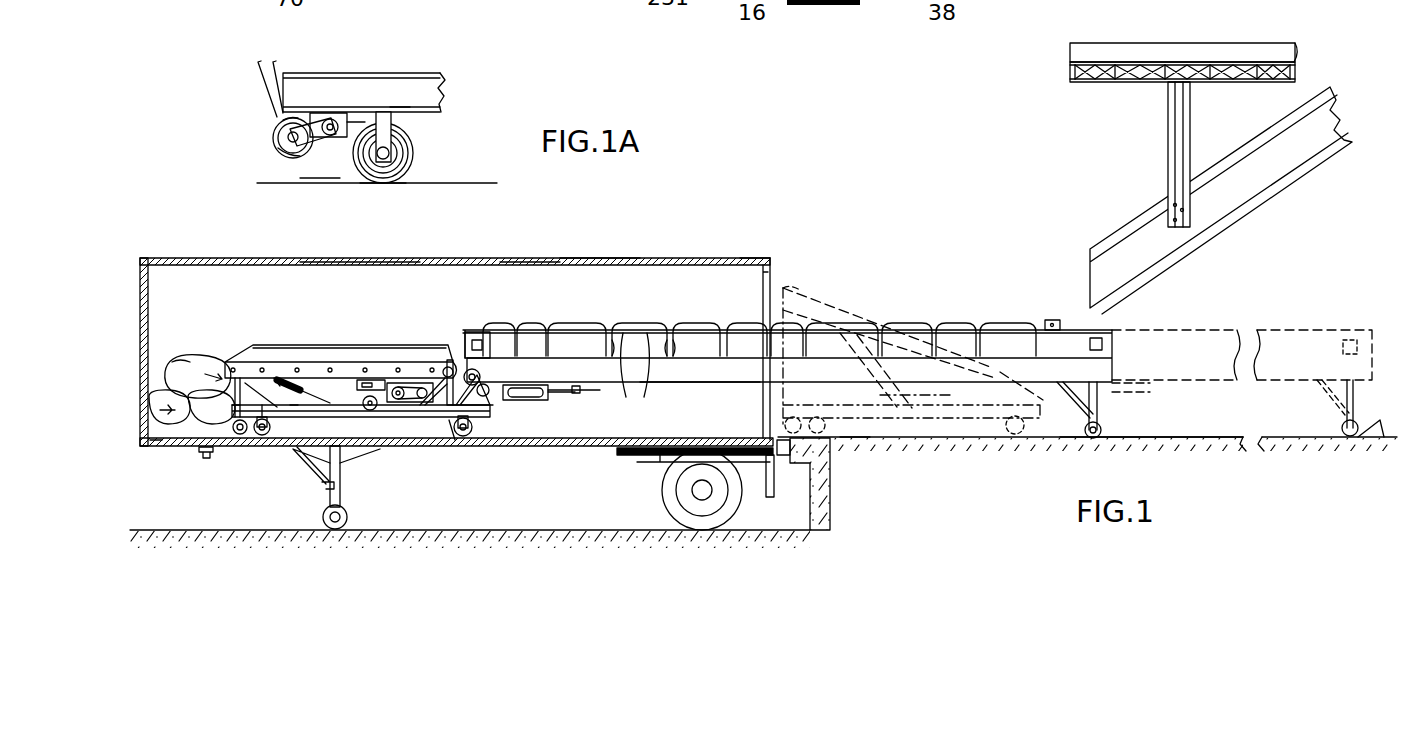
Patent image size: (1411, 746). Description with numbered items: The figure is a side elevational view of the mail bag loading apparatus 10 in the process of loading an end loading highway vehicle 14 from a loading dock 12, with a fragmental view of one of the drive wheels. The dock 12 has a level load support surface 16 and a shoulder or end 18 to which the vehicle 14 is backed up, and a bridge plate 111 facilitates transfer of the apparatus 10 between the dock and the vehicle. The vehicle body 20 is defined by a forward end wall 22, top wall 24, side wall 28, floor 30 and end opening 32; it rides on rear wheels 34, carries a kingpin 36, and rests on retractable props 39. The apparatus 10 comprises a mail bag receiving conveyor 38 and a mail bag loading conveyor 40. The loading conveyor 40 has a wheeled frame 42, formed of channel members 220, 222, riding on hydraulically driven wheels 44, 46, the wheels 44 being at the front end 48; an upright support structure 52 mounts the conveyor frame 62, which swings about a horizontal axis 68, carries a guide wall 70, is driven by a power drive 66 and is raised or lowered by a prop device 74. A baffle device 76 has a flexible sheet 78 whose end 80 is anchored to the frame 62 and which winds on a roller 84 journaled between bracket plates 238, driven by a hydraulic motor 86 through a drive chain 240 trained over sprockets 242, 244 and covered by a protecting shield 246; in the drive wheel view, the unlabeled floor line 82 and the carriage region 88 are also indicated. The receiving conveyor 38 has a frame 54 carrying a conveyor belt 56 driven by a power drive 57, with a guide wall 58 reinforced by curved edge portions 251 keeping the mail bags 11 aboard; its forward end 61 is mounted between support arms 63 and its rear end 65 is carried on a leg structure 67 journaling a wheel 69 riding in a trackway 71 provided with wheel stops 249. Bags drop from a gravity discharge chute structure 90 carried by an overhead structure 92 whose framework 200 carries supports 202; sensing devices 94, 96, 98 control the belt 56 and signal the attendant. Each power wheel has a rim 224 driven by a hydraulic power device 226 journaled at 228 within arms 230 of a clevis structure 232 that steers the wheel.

In FIG. 1, the apparatus 10 is at (955, 287).
In FIG. 1, the mail bags 11 is at (645, 330).
In FIG. 1, the loading dock 12 is at (960, 478).
In FIG. 1, the highway vehicle 14 is at (533, 256).
In FIG. 1, the load support surface 16 is at (924, 437).
In FIG. 1, the shoulder or end 18 is at (789, 464).
In FIG. 1, the body 20 is at (641, 257).
In FIG. 1, the forward end wall 22 is at (141, 292).
In FIG. 1, the top wall 24 is at (563, 258).
In FIG. 1, the side wall 28 is at (347, 266).
In FIG. 1, the floor 30 is at (565, 446).
In FIG. 1, the end opening 32 is at (789, 279).
In FIG. 1, the rear wheels 34 is at (654, 495).
In FIG. 1, the kingpin 36 is at (199, 459).
In FIG. 1, the mail bag receiving conveyor 38 is at (730, 302).
In FIG. 1, the retractable props 39 is at (366, 494).
In FIG. 1, the mail bag loading conveyor 40 is at (406, 325).
In FIG. 1, the wheeled frame 42 is at (300, 409).
In FIG. 1A, the hydraulically driven wheels 44 is at (386, 186).
In FIG. 1, the hydraulically driven wheels 44 is at (266, 414).
In FIG. 1, the hydraulically driven wheels 46 is at (476, 428).
In FIG. 1, the front end 48 is at (262, 404).
In FIG. 1, the upright support structure 52 is at (390, 416).
In FIG. 1, the frame 54 is at (690, 390).
In FIG. 1, the conveyor belt 56 is at (630, 361).
In FIG. 1, the power drive 57 is at (527, 418).
In FIG. 1, the guide wall 58 is at (572, 346).
In FIG. 1, the forward end 61 is at (448, 360).
In FIG. 1, the conveyor frame 62 is at (322, 367).
In FIG. 1, the support arms 63 is at (479, 381).
In FIG. 1, the rear end 65 is at (1102, 372).
In FIG. 1, the power drive 66 is at (416, 380).
In FIG. 1, the leg structure 67 is at (1107, 408).
In FIG. 1, the horizontal axis 68 is at (450, 448).
In FIG. 1, the wheel 69 is at (1101, 429).
In FIG. 1, the guide wall 70 is at (293, 353).
In FIG. 1, the trackway 71 is at (1236, 436).
In FIG. 1, the prop device 74 is at (265, 438).
In FIG. 1, the baffle device 76 is at (200, 373).
In FIG. 1A, the flexible sheet 78 is at (262, 85).
In FIG. 1, the flexible sheet 78 is at (156, 441).
In FIG. 1, the end 80 is at (238, 404).
In FIG. 1A, the floor line 82 is at (290, 162).
In FIG. 1A, the roller 84 is at (274, 138).
In FIG. 1, the roller 84 is at (233, 438).
In FIG. 1A, the hydraulic motor 86 is at (395, 105).
In FIG. 1A, the carriage 88 is at (318, 166).
In FIG. 1, the gravity discharge chute structure 90 is at (1270, 216).
In FIG. 1, the overhead structure 92 is at (1285, 25).
In FIG. 1, the sensing device 94 is at (1052, 314).
In FIG. 1, the sensing device 96 is at (1114, 327).
In FIG. 1, the sensing device 98 is at (483, 328).
In FIG. 1, the bridge plate 111 is at (860, 437).
In FIG. 1, the framework 200 is at (1297, 58).
In FIG. 1, the supports 202 is at (1186, 143).
In FIG. 1, the channel member 220 is at (361, 420).
In FIG. 1, the channel member 222 is at (365, 420).
In FIG. 1A, the rim 224 is at (418, 163).
In FIG. 1A, the hydraulic power device 226 is at (414, 152).
In FIG. 1A, the journal 228 is at (397, 150).
In FIG. 1A, the arms 230 is at (394, 117).
In FIG. 1A, the clevis structure 232 is at (440, 95).
In FIG. 1A, the bracket plates 238 is at (292, 118).
In FIG. 1A, the drive chain 240 is at (332, 119).
In FIG. 1A, the sprocket 242 is at (363, 123).
In FIG. 1A, the sprocket 244 is at (288, 150).
In FIG. 1A, the protecting shield 246 is at (316, 118).
In FIG. 1, the wheel stops 249 is at (1367, 430).
In FIG. 1, the curved edge portions 251 is at (700, 324).